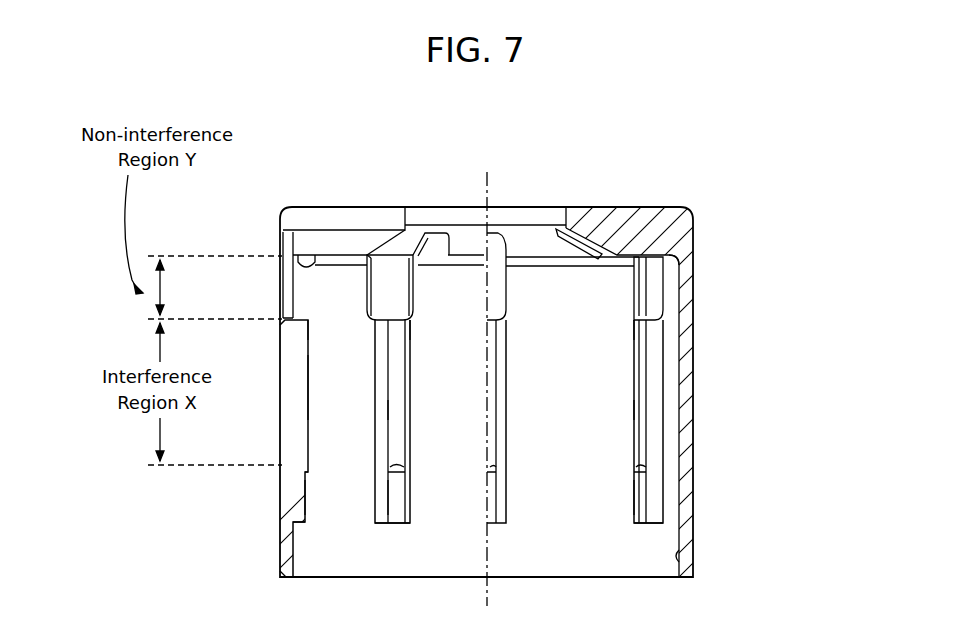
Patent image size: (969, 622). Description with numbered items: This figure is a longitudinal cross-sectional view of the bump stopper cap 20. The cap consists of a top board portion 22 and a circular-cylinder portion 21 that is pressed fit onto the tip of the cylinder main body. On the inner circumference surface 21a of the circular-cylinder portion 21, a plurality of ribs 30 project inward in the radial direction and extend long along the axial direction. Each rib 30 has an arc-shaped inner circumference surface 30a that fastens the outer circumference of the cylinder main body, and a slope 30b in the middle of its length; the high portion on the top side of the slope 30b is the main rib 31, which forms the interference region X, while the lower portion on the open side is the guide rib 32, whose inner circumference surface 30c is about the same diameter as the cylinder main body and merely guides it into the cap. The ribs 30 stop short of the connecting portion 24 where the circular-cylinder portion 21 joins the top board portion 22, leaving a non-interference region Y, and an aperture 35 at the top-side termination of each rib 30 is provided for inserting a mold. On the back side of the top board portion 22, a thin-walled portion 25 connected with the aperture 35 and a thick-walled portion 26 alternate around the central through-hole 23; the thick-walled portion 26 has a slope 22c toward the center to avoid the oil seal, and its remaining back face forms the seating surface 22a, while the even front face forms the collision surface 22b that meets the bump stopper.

The bump stopper cap 20 is at (715, 185).
The circular-cylinder portion 21 is at (694, 512).
The inner circumference surface 21a is at (688, 562).
The top board portion 22 is at (387, 206).
The seating surface 22a is at (345, 262).
The collision surface 22b is at (625, 206).
The slope 22c is at (577, 262).
The through-hole 23 is at (572, 210).
The connecting portion 24 is at (298, 250).
The thin-walled portion 25 is at (318, 206).
The thick-walled portion 26 is at (660, 215).
The rib 30 is at (410, 380).
The inner circumference surface of the rib 30a is at (310, 360).
The slope 30b is at (310, 474).
The inner circumference surface of the guide rib 30c is at (307, 495).
The main rib 31 is at (310, 328).
The guide rib 32 is at (300, 508).
The aperture 35 is at (386, 244).